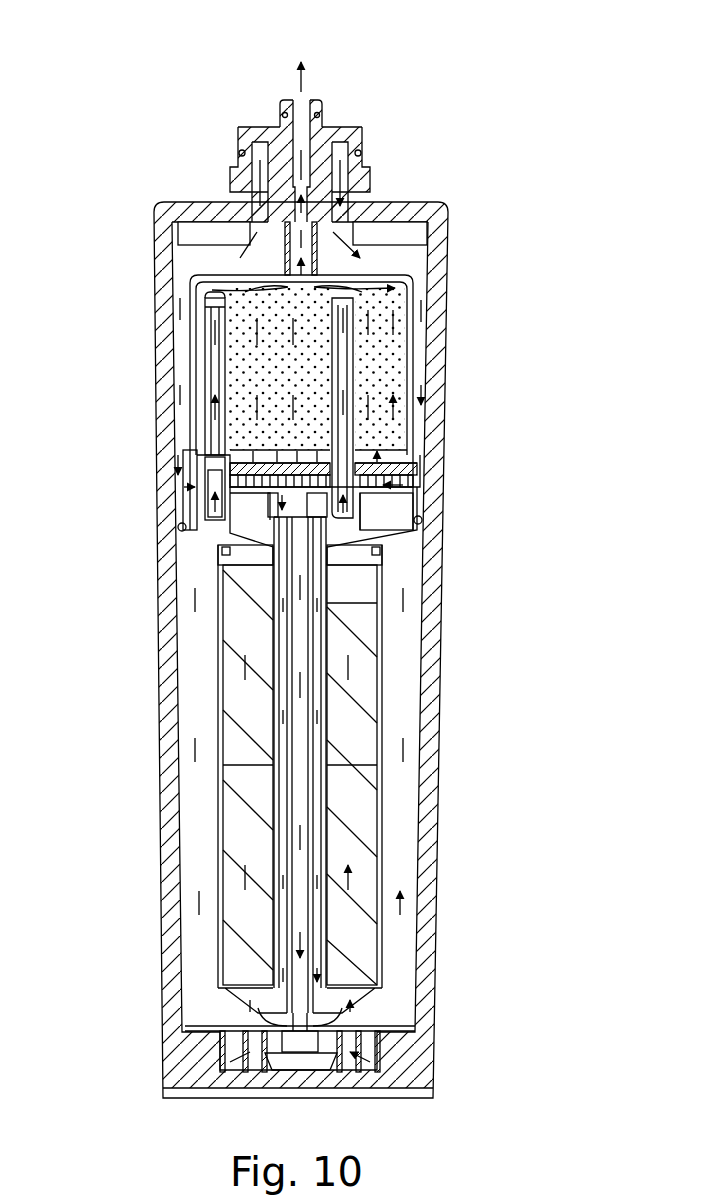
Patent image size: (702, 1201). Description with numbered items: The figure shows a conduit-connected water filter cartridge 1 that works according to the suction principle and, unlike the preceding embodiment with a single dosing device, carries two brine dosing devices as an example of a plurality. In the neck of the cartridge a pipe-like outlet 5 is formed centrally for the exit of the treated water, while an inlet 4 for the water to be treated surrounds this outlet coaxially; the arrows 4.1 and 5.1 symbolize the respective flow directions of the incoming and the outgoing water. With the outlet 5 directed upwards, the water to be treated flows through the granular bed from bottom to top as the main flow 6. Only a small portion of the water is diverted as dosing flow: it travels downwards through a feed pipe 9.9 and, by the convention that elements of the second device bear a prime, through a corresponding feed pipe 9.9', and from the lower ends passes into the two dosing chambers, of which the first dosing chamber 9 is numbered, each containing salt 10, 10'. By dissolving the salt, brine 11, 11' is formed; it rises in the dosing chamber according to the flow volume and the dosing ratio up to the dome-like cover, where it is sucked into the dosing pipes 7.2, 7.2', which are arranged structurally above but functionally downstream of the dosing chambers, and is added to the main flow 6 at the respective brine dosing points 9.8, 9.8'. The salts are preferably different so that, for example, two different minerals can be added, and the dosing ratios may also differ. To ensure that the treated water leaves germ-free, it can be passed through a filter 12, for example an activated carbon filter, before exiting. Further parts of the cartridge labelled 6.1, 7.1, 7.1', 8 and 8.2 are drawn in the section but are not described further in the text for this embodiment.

The filter cartridge 1 is at (212, 72).
The inlet 4 is at (340, 133).
The arrows for water to be treated 4.1 is at (341, 213).
The outlet 5 is at (305, 112).
The arrow for treated water 5.1 is at (303, 82).
The main flow 6 is at (243, 320).
The bypass valve 6.1 is at (215, 468).
The valve chamber 7.1 is at (401, 485).
The valve 7.1' is at (145, 473).
The dosing pipe 7.2 is at (452, 407).
The second dosing pipe 7.2' is at (145, 342).
The return tube 8 is at (247, 367).
The return tube channel 8.2 is at (195, 353).
The dosing chamber 9 is at (197, 797).
The brine dosing point 9.8 is at (334, 301).
The second brine dosing point 9.8' is at (124, 352).
The feed pipe 9.9 is at (423, 752).
The central bore 9.9' is at (432, 765).
The salt 10 is at (308, 981).
The second salt 10' is at (308, 939).
The brine 11 is at (311, 777).
The second brine 11' is at (309, 766).
The filter 12 is at (250, 395).